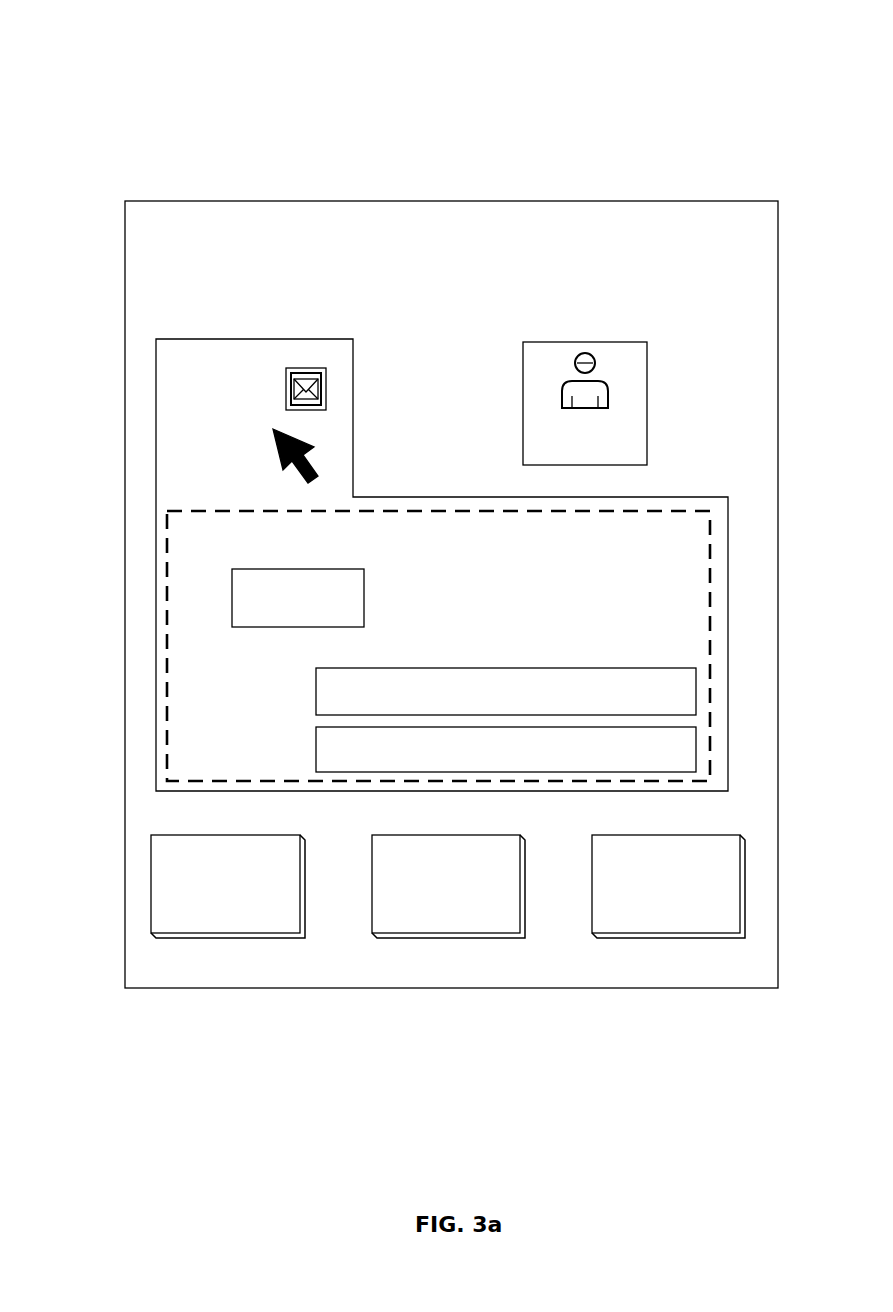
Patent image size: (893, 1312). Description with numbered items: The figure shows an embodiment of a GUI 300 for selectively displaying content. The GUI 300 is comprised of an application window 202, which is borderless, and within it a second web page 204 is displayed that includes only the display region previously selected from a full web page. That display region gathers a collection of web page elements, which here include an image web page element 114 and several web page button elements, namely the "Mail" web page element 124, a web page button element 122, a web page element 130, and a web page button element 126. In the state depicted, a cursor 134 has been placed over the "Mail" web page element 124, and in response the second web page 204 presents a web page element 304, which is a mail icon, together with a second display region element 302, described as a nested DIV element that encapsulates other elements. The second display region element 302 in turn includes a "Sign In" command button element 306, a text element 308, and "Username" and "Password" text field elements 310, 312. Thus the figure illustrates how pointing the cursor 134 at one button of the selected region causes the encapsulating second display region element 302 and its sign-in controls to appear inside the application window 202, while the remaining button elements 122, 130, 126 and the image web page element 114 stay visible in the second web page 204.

The GUI 300 is at (738, 77).
The application window 202 is at (176, 201).
The "Mail" web page element 124 is at (333, 338).
The web page element (mail icon) 304 is at (326, 393).
The cursor 134 is at (283, 441).
The image web page element 114 is at (646, 372).
The second web page 204 is at (717, 419).
The second display region element 302 is at (710, 555).
The "Sign In" command button element 306 is at (301, 569).
The text element 308 is at (519, 582).
The "Username" text field element 310 is at (192, 695).
The "Password" text field element 312 is at (192, 748).
The web page button element 122 is at (226, 933).
The web page element 130 is at (445, 933).
The web page button element 126 is at (665, 933).